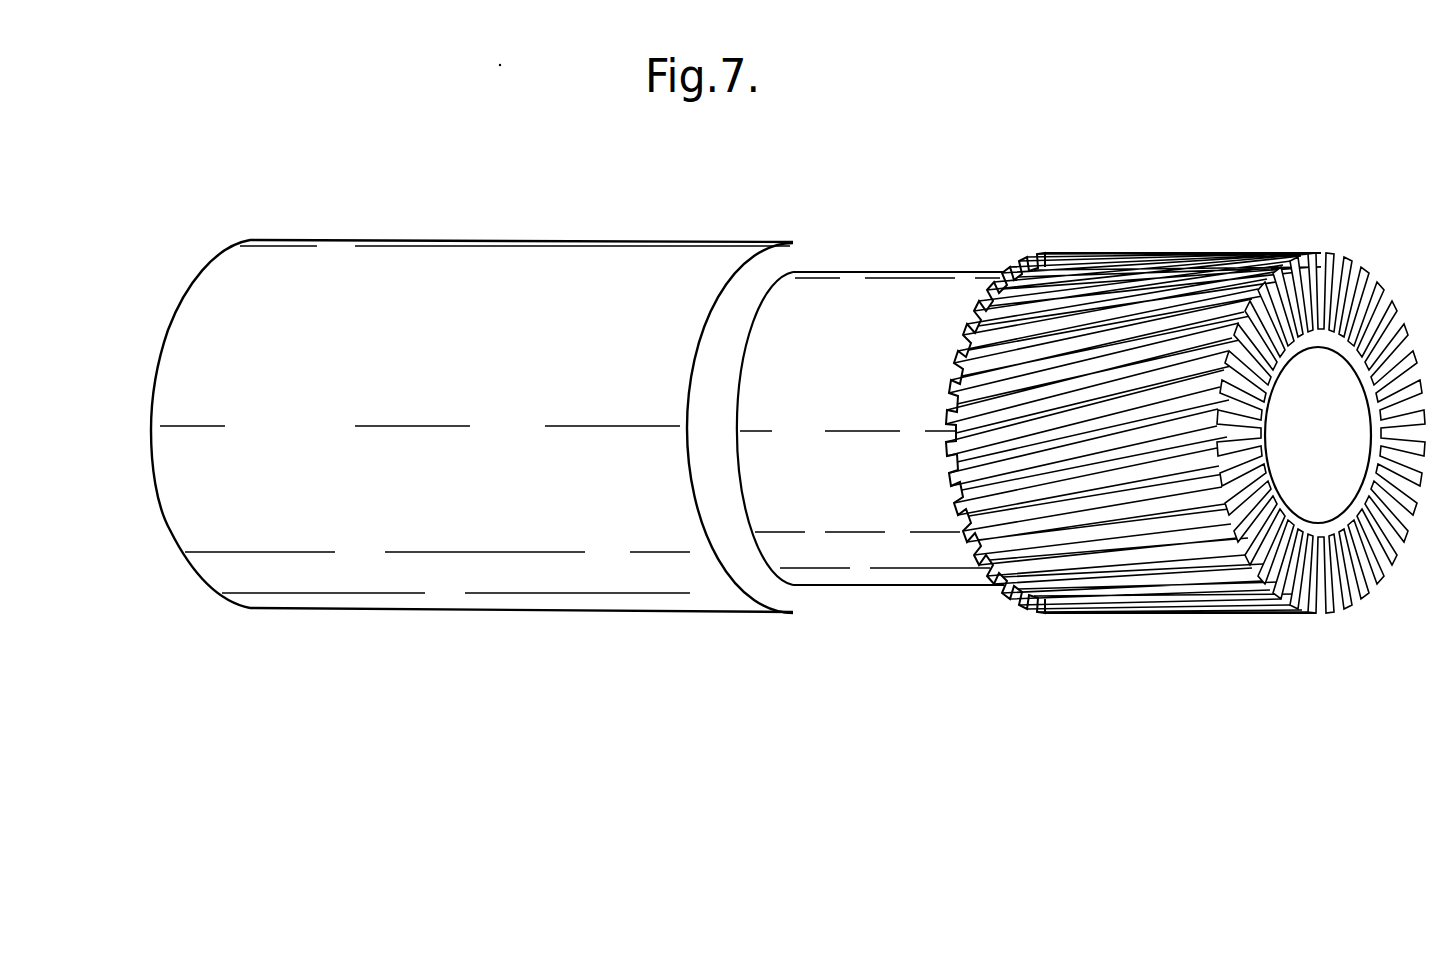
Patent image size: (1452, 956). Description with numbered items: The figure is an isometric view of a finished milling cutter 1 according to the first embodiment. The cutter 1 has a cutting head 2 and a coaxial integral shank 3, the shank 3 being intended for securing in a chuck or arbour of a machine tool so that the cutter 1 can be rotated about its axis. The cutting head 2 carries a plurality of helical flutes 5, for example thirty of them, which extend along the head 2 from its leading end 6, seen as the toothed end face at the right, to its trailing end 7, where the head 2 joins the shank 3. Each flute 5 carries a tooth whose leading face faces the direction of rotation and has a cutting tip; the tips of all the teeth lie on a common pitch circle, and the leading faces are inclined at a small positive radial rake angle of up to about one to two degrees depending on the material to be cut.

The milling cutter 1 is at (868, 248).
The cutting head 2 is at (1136, 230).
The shank 3 is at (423, 266).
The helical flutes 5 is at (1293, 260).
The leading end 6 is at (1387, 305).
The trailing end 7 is at (1026, 265).